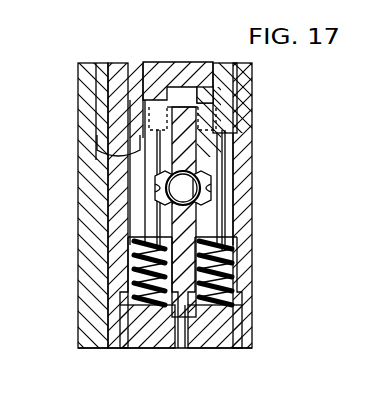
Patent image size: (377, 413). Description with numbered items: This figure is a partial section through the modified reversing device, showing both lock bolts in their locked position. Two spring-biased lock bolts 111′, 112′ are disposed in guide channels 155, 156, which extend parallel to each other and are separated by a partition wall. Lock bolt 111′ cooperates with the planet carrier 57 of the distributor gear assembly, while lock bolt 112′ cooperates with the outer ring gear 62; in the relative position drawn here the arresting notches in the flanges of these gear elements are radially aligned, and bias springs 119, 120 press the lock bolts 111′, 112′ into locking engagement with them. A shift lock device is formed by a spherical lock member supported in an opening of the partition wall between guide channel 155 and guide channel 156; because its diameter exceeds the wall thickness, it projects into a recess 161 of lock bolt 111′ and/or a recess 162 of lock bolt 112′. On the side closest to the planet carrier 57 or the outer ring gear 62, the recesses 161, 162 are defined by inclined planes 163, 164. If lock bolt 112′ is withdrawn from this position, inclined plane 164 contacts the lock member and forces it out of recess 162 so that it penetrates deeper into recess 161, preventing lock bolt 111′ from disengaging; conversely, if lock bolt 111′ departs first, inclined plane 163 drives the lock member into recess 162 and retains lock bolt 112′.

The planet carrier 57 is at (152, 80).
The outer ring gear 62 is at (206, 82).
The lock bolt 111′ is at (142, 218).
The lock bolt 112′ is at (220, 218).
The bias spring 119 is at (158, 349).
The bias spring 120 is at (229, 349).
The guide channel 155 is at (127, 262).
The guide channel 156 is at (234, 268).
The recess 161 is at (160, 191).
The recess 162 is at (205, 193).
The inclined plane 163 is at (157, 178).
The inclined plane 164 is at (212, 176).